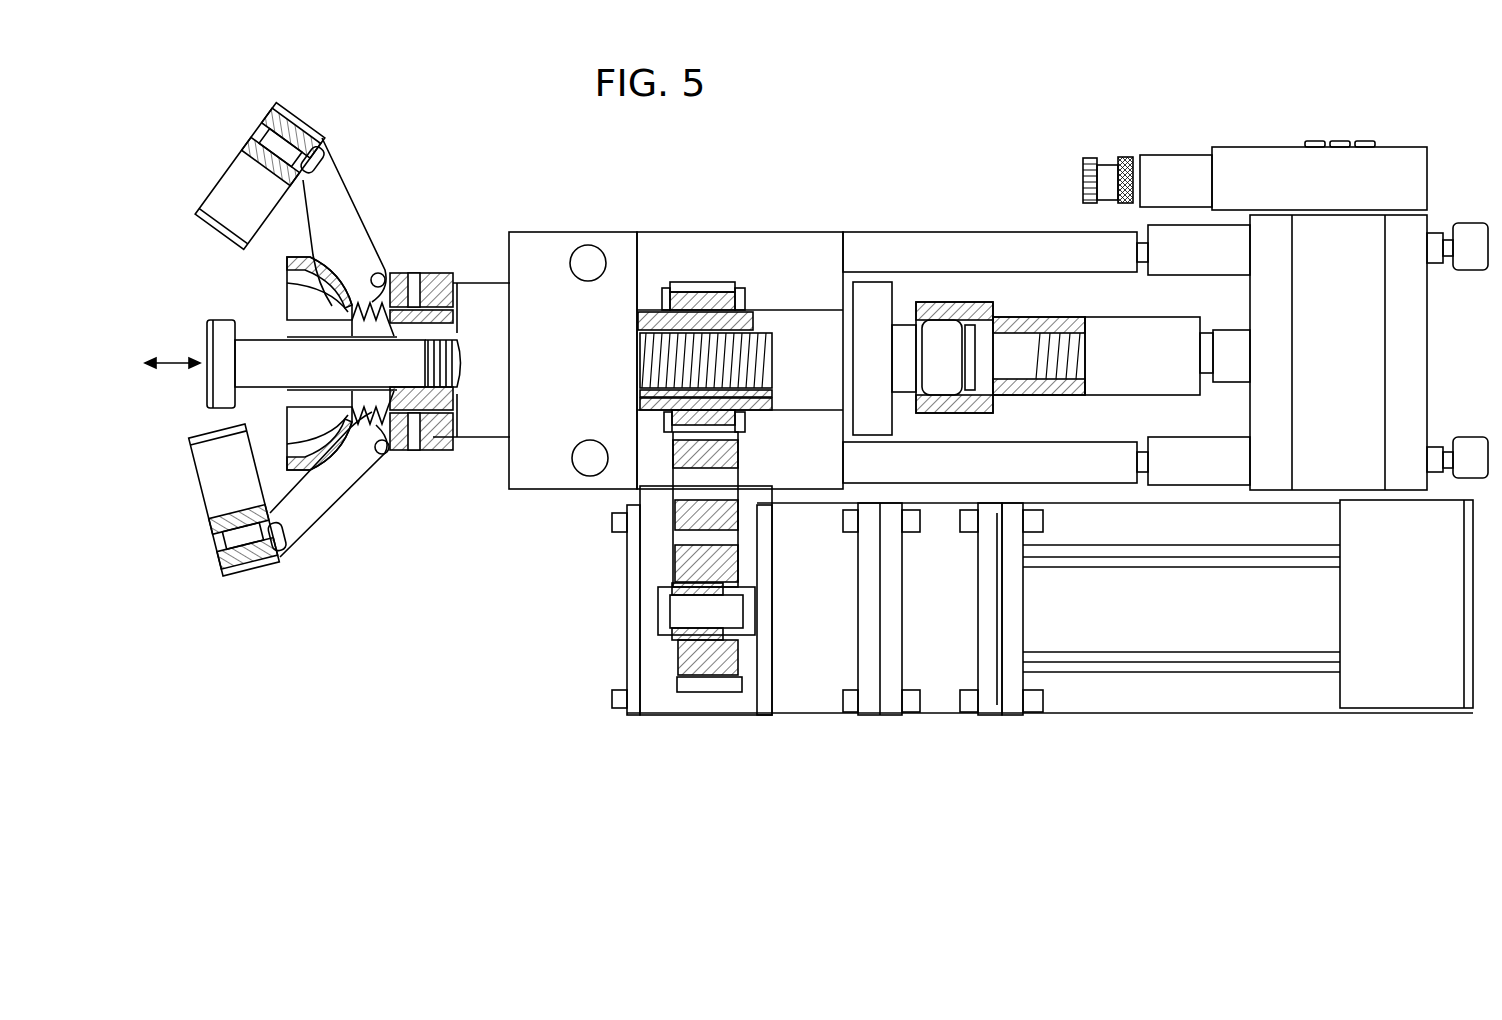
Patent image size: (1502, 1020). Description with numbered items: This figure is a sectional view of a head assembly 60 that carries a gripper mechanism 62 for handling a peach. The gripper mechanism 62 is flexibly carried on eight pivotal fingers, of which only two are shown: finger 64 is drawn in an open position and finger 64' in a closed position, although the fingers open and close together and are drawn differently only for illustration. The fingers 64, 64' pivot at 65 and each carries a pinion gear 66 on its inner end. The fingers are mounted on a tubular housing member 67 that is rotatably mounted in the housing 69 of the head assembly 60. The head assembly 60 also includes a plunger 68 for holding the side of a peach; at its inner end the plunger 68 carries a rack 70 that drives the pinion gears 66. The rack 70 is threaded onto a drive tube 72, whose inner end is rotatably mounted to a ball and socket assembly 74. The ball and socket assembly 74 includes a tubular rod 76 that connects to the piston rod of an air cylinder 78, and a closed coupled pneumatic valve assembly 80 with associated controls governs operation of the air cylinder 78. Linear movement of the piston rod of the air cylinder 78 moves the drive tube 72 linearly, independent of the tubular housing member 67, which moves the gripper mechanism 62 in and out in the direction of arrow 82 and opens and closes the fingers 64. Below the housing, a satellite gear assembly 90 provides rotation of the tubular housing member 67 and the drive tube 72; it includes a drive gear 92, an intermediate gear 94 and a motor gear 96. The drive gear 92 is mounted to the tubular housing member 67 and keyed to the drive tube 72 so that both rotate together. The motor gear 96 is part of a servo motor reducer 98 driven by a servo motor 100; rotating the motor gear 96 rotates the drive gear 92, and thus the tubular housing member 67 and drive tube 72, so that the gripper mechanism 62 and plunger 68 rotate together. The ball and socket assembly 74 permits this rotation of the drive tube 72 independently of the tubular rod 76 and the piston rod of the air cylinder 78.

The head assembly 60 is at (875, 196).
The gripper mechanism 62 is at (231, 172).
The pivotal finger 64 is at (355, 222).
The pivotal finger 64' is at (295, 494).
The pivot 65 is at (381, 273).
The pinion gear 66 is at (372, 300).
The tubular housing member 67 is at (440, 290).
The plunger 68 is at (270, 335).
The housing 69 is at (556, 369).
The rack 70 is at (377, 320).
The drive tube 72 is at (652, 320).
The ball and socket assembly 74 is at (945, 290).
The tubular rod 76 is at (1022, 317).
The air cylinder 78 is at (1324, 369).
The pneumatic valve assembly 80 is at (1258, 150).
The arrow 82 is at (176, 358).
The satellite gear assembly 90 is at (650, 549).
The drive gear 92 is at (713, 293).
The intermediate gear 94 is at (673, 458).
The motor gear 96 is at (677, 653).
The servo motor reducer 98 is at (804, 631).
The servo motor 100 is at (1165, 624).